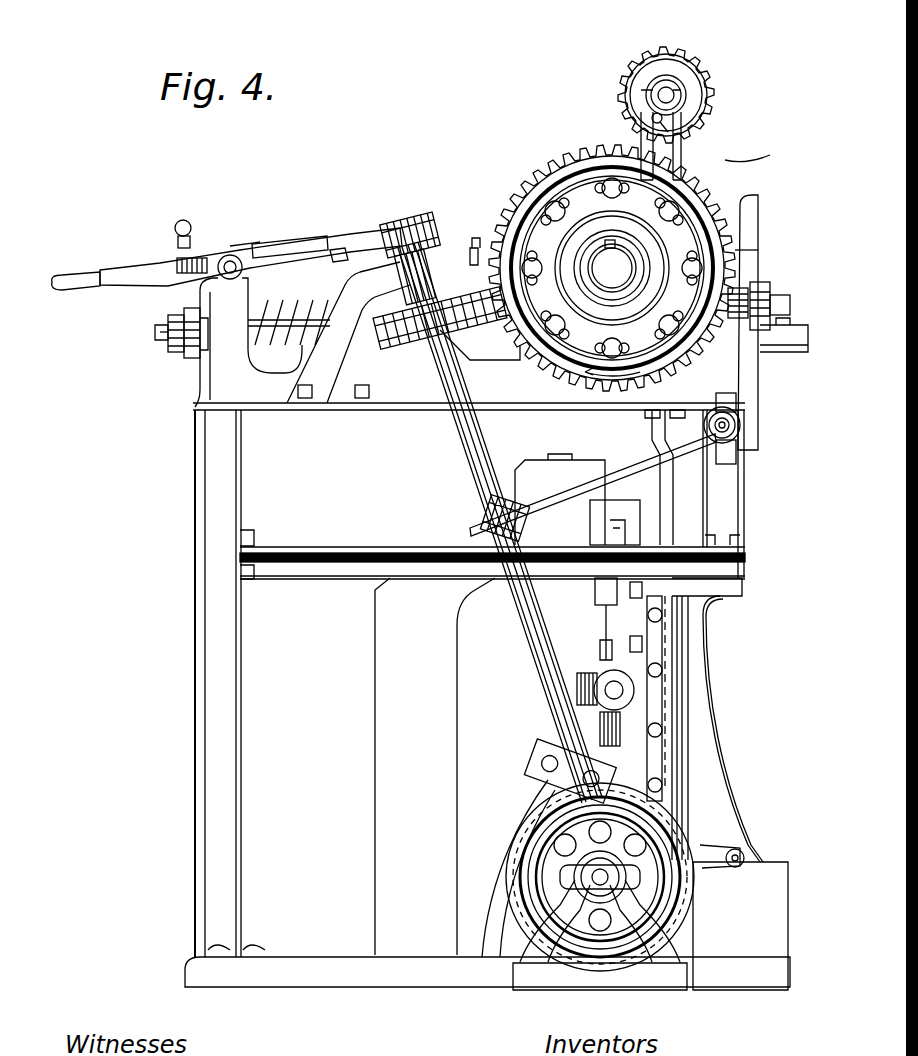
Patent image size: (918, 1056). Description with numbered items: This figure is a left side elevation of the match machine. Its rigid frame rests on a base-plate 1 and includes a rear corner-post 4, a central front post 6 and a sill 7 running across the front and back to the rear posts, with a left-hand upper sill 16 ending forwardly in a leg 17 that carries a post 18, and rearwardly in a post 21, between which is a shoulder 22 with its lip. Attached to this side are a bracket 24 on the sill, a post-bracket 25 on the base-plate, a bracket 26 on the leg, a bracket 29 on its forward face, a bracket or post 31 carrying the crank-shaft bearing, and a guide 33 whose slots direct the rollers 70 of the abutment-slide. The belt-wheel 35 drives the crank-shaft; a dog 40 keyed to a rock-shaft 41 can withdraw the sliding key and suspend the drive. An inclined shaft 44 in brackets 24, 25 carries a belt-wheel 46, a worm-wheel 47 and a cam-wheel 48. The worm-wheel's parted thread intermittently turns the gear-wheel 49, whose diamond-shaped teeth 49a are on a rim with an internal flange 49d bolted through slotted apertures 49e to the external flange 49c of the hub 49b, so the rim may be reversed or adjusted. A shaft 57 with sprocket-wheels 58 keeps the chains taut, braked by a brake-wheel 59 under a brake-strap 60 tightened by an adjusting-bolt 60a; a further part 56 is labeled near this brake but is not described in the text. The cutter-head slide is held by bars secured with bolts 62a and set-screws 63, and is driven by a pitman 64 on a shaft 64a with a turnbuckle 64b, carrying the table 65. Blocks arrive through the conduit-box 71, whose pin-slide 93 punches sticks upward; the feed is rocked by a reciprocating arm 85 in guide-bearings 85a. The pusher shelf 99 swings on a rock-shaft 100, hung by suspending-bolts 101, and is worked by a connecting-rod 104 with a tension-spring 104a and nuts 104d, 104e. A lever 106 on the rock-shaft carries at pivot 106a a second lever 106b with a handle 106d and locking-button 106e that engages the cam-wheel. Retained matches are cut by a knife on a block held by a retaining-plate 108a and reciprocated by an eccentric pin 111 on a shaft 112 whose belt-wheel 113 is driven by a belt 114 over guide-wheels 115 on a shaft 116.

The base-plate 1 is at (455, 975).
The rear corner-post 4 is at (205, 700).
The central front post 6 is at (722, 775).
The sill 7 is at (345, 548).
The upper sill 16 is at (445, 400).
The leg 17 is at (745, 520).
The post 18 is at (754, 146).
The post 21 is at (215, 355).
The shoulder 22 is at (390, 395).
The bracket 24 is at (322, 410).
The post-bracket 25 is at (508, 830).
The bracket 26 is at (730, 460).
The bracket 29 is at (758, 237).
The bracket or post 31 is at (690, 962).
The guide 33 is at (650, 455).
The belt-wheel 35 is at (670, 922).
The dog 40 is at (730, 845).
The rock-shaft 41 is at (745, 855).
The inclined shaft 44 is at (478, 766).
The belt-wheel 46 is at (482, 515).
The worm-wheel 47 is at (432, 362).
The cam-wheel 48 is at (400, 218).
The gear-wheel 49 is at (740, 198).
The diamond-shaped teeth 49a is at (575, 195).
The hub 49b is at (570, 258).
The external flange 49c is at (680, 235).
The internal flange 49d is at (570, 200).
The slotted apertures 49e is at (505, 215).
The rod 56 is at (640, 130).
The shaft 57 is at (685, 75).
The sprocket-wheels 58 is at (670, 70).
The brake-wheel 59 is at (660, 85).
The brake-strap 60 is at (625, 78).
The adjusting-bolt 60a is at (668, 148).
The bolts 62a is at (625, 595).
The set-screws 63 is at (662, 670).
The pitman 64 is at (600, 740).
The shaft 64a is at (585, 705).
The turnbuckle 64b is at (620, 790).
The table 65 is at (615, 502).
The rollers 70 is at (752, 528).
The conduit-box 71 is at (560, 505).
The reciprocating arm 85 is at (600, 632).
The guide-bearings 85a is at (595, 592).
The pin-slide 93 is at (610, 528).
The shelf 99 is at (330, 300).
The rock-shaft 100 is at (232, 262).
The suspending-bolts 101 is at (472, 250).
The connecting-rod 104 is at (160, 338).
The tension-spring 104a is at (268, 340).
The nut 104d is at (192, 318).
The nut 104e is at (162, 330).
The lever 106 is at (290, 240).
The pivot 106a is at (338, 246).
The second lever 106b is at (222, 240).
The handle 106d is at (68, 272).
The locking-button 106e is at (182, 220).
The retaining-plate 108a is at (770, 295).
The eccentric pin 111 is at (790, 305).
The shaft 112 is at (775, 345).
The belt-wheel 113 is at (748, 290).
The belt 114 is at (742, 380).
The guide-wheels 115 is at (740, 430).
The shaft 116 is at (738, 405).